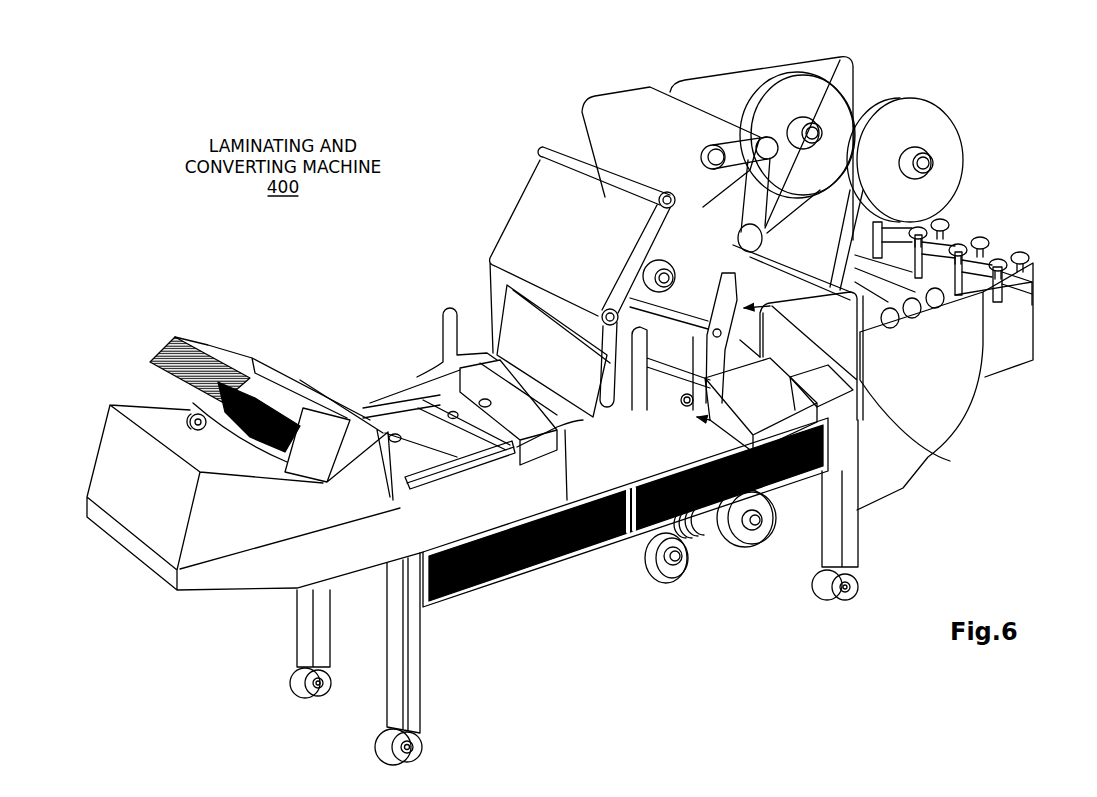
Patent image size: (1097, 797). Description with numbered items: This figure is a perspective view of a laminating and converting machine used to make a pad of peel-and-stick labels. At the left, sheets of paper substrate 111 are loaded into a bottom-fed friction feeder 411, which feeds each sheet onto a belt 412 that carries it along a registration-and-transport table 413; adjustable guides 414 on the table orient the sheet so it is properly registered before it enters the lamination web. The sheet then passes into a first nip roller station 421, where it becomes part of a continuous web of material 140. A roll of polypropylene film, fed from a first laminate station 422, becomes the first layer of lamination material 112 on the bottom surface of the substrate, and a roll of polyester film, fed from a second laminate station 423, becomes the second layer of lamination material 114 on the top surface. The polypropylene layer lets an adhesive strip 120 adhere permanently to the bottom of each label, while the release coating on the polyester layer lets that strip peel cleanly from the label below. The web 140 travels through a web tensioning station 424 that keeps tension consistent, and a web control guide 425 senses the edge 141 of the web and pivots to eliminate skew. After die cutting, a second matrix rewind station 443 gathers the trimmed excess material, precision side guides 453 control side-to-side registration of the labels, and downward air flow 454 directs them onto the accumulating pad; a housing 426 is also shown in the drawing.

The sheet of paper substrate 111 is at (183, 405).
The bottom-fed friction feeder 411 is at (127, 460).
The adjustable guides 414 is at (403, 417).
The belt 412 is at (447, 398).
The registration-and-transport table 413 is at (397, 473).
The first layer of lamination material 112 is at (577, 413).
The first laminate station 422 is at (648, 584).
The adhesive strip 120 is at (702, 536).
The first nip roller station 421 is at (783, 477).
The second layer of lamination material 114 is at (543, 233).
The second laminate station 423 is at (653, 253).
The web of material 140 is at (613, 147).
The web tensioning station 424 is at (734, 150).
The web control guide 425 is at (758, 195).
The second matrix rewind station 443 is at (957, 127).
The edge of the web of material 141 is at (779, 215).
The downward air flow 454 is at (940, 254).
The precision side guides 453 is at (938, 272).
The housing 426 is at (950, 461).